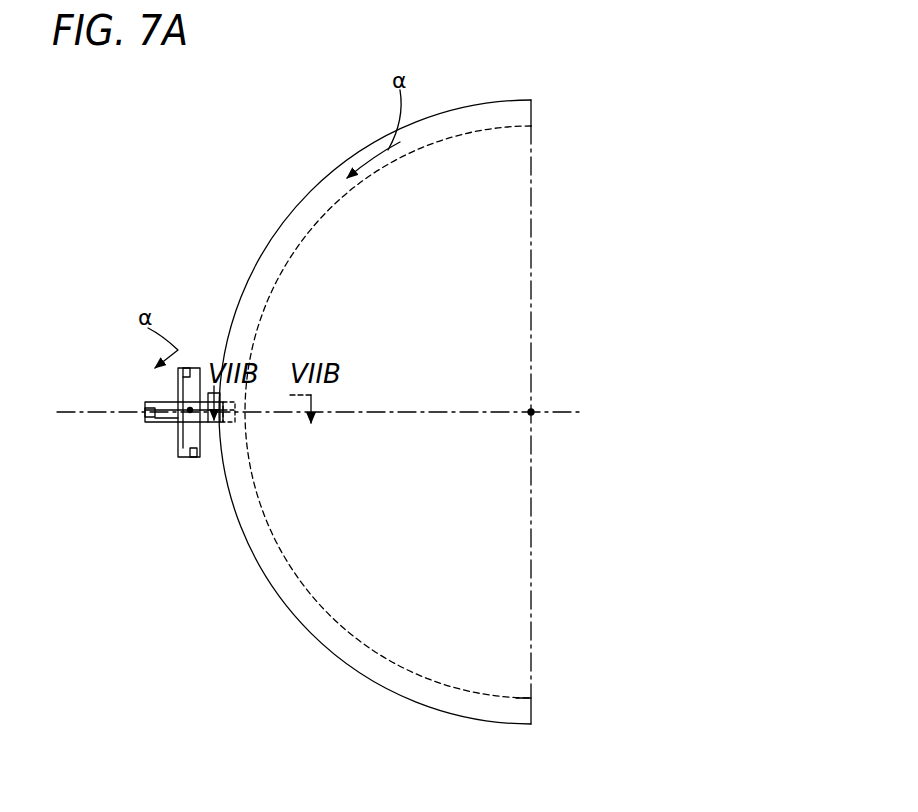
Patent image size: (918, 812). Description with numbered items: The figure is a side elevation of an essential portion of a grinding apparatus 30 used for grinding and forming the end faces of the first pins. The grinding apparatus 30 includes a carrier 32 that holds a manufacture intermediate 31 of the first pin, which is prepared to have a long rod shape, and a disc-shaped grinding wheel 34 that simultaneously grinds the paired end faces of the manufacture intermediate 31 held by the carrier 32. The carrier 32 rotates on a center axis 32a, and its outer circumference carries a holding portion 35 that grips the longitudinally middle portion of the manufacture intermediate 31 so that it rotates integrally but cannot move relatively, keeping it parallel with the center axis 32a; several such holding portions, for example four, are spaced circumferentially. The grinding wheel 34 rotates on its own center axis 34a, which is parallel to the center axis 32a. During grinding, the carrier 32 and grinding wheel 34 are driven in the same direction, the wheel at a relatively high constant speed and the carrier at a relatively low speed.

The grinding apparatus 30 is at (172, 282).
The manufacture intermediate 31 is at (187, 369).
The carrier 32 is at (148, 435).
The center axis 32a is at (190, 412).
The grinding wheel 34 is at (328, 203).
The center axis 34a is at (531, 413).
The holding portion 35 is at (150, 393).